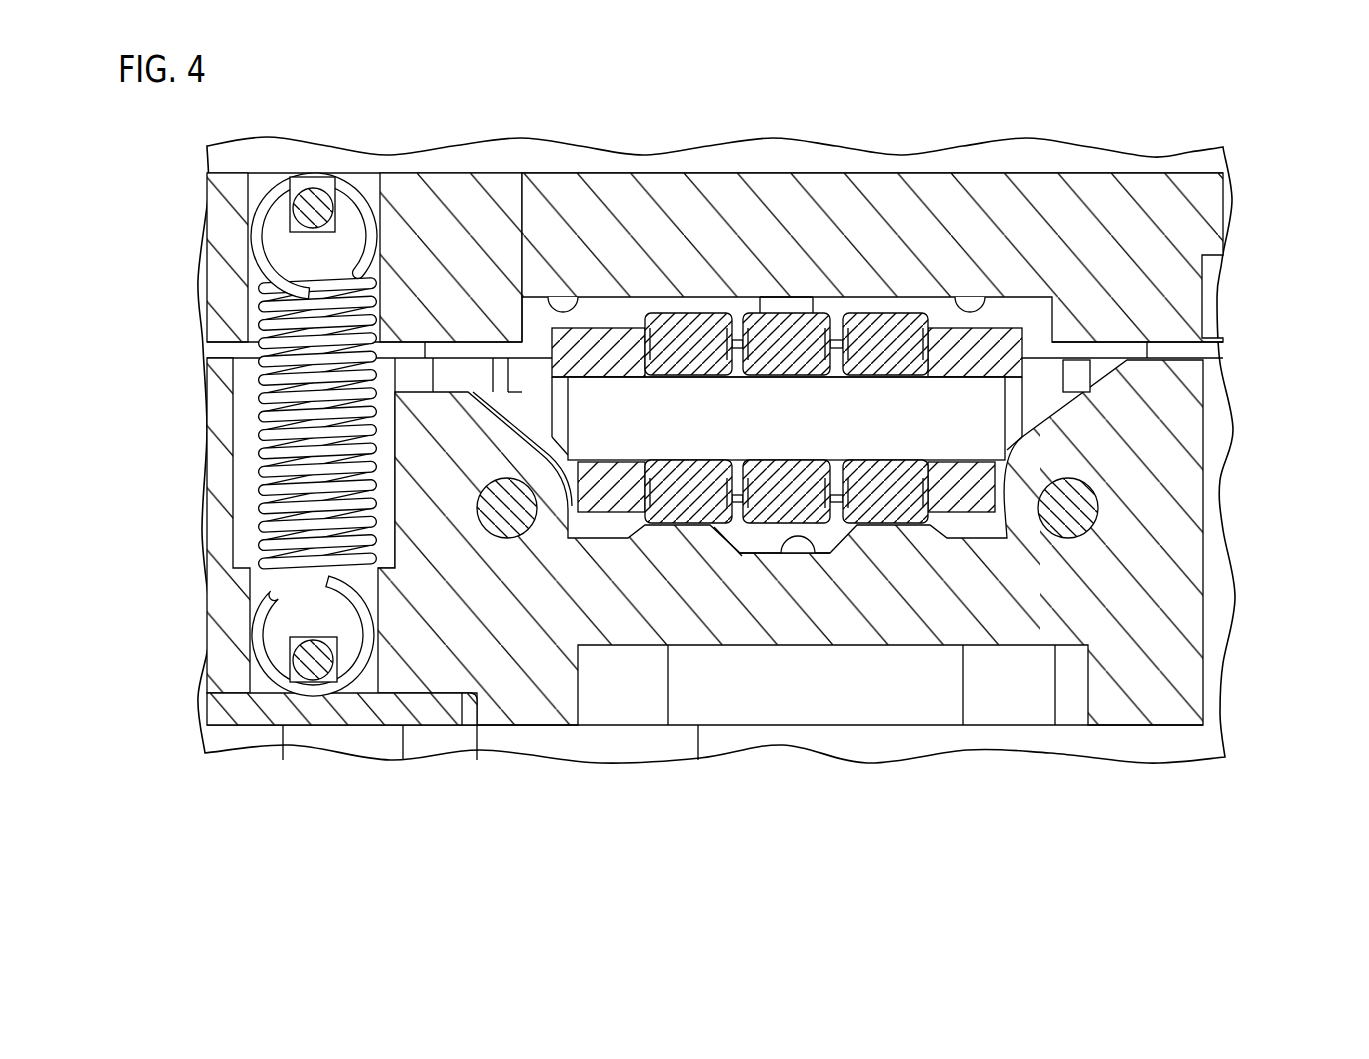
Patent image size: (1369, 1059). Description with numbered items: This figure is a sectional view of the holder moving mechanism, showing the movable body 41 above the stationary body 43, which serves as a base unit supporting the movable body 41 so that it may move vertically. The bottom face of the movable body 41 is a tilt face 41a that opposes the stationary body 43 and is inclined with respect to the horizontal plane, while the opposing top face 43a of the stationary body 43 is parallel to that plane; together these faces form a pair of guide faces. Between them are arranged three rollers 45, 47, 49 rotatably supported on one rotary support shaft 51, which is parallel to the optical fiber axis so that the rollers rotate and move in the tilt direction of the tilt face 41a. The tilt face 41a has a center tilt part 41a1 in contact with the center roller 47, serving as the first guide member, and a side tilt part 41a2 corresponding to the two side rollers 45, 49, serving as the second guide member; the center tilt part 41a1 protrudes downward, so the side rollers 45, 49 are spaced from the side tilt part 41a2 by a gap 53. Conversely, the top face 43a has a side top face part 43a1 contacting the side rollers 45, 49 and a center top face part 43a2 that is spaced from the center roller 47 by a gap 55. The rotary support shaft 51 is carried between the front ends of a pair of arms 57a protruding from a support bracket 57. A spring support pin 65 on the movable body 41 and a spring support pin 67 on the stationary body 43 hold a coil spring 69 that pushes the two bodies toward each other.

The movable body 41 is at (1163, 197).
The tilt face 41a is at (792, 186).
The center tilt part 41a1 is at (817, 325).
The side tilt part 41a2 is at (560, 300).
The stationary body 43 is at (1145, 703).
The top face 43a is at (801, 677).
The side top face part 43a1 is at (688, 505).
The center top face part 43a2 is at (795, 527).
The side roller 45 is at (883, 327).
The center roller 47 is at (777, 327).
The side roller 49 is at (668, 305).
The rotary support shaft 51 is at (612, 438).
The gap 53 is at (688, 330).
The gap 55 is at (763, 530).
The support bracket 57 is at (838, 488).
The arms 57a is at (567, 350).
The spring support pin 65 is at (312, 188).
The spring support pin 67 is at (302, 682).
The coil spring 69 is at (252, 425).